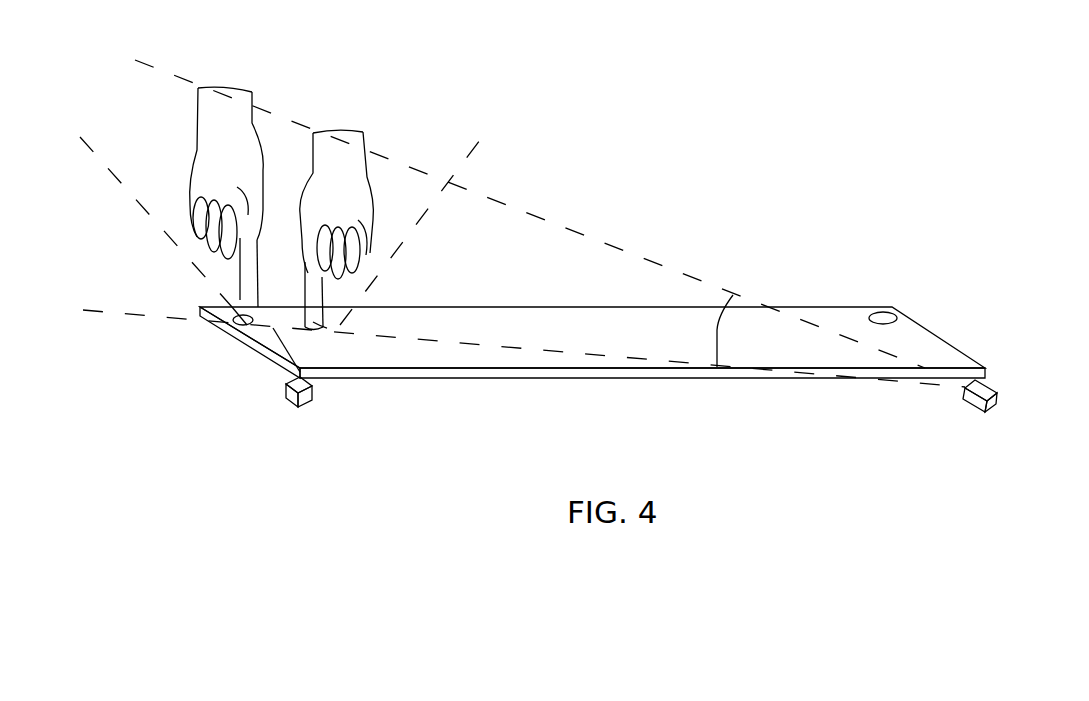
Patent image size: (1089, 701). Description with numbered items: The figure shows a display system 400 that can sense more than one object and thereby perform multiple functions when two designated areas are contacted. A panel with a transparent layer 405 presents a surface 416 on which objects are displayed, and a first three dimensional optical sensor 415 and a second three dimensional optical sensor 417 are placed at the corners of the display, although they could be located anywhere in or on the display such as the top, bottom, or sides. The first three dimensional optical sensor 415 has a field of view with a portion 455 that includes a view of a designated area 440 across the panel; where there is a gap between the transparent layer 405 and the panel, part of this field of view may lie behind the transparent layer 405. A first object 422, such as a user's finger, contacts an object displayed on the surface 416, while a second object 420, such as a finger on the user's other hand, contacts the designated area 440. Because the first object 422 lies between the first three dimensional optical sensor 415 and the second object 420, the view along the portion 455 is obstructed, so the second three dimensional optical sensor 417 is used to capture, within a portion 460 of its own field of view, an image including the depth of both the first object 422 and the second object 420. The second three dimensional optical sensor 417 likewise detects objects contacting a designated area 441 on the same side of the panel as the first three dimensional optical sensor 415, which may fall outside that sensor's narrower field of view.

The display system 400 is at (866, 71).
The transparent layer 405 is at (800, 378).
The first three dimensional optical sensor 415 is at (977, 410).
The surface of the panel 416 is at (448, 323).
The second three dimensional optical sensor 417 is at (303, 397).
The second object 420 is at (220, 153).
The first object 422 is at (342, 178).
The designated area 440 is at (245, 325).
The designated area 441 is at (897, 316).
The portion of the field of view 455 is at (735, 298).
The portion of the field of view 460 is at (327, 335).